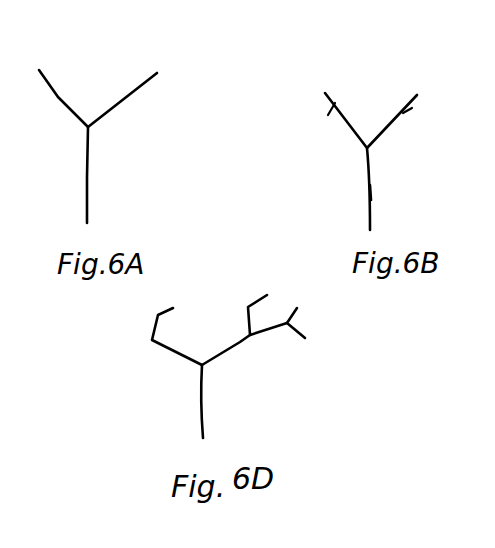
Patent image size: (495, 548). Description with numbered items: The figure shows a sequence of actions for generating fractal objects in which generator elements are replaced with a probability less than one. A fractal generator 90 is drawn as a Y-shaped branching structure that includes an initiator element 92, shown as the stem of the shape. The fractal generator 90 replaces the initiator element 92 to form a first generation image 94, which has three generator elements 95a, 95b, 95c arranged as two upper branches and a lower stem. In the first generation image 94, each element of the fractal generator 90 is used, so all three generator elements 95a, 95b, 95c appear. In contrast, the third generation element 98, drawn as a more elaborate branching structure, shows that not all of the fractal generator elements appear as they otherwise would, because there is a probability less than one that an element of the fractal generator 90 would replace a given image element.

In FIG. 6A, the fractal generator 90 is at (109, 125).
In FIG. 6A, the initiator element 92 is at (87, 177).
In FIG. 6B, the first generation image 94 is at (378, 129).
In FIG. 6B, the generator element 95a is at (316, 123).
In FIG. 6B, the generator element 95b is at (431, 119).
In FIG. 6B, the generator element 95c is at (372, 192).
In FIG. 6D, the third generation element 98 is at (215, 278).